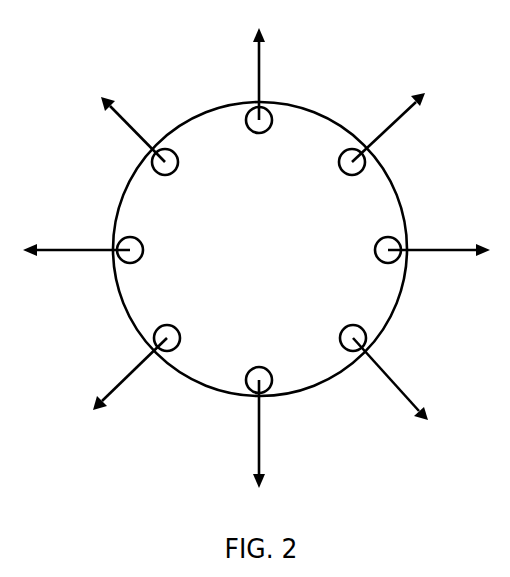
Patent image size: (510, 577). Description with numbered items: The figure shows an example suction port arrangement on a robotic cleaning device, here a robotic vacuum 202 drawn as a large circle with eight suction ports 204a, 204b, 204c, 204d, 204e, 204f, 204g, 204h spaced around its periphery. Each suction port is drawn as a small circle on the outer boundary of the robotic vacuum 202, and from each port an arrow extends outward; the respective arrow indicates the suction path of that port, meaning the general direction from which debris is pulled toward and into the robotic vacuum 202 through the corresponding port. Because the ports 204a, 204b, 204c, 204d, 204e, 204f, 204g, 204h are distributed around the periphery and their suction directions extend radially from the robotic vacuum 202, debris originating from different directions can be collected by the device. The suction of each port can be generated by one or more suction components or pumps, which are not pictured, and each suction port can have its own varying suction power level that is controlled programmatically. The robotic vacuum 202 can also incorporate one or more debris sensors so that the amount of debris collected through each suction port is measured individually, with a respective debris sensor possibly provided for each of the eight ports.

The robotic vacuum 202 is at (245, 291).
The suction port 204a is at (255, 118).
The suction port 204b is at (352, 160).
The suction port 204c is at (390, 246).
The suction port 204d is at (356, 338).
The suction port 204e is at (262, 383).
The suction port 204f is at (167, 341).
The suction port 204g is at (126, 247).
The suction port 204h is at (162, 161).